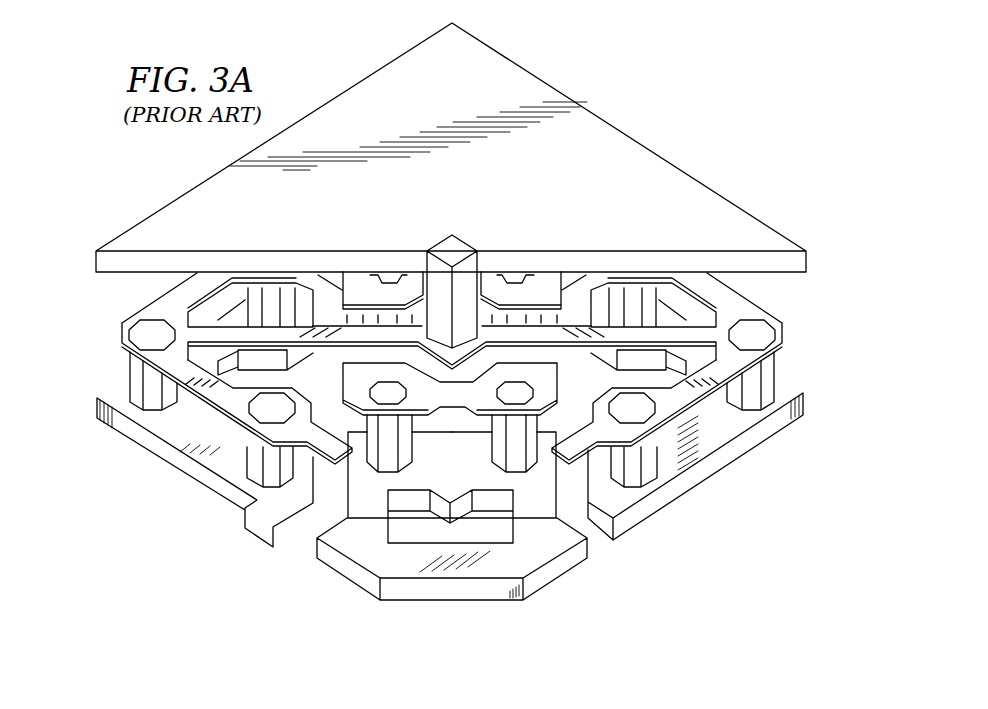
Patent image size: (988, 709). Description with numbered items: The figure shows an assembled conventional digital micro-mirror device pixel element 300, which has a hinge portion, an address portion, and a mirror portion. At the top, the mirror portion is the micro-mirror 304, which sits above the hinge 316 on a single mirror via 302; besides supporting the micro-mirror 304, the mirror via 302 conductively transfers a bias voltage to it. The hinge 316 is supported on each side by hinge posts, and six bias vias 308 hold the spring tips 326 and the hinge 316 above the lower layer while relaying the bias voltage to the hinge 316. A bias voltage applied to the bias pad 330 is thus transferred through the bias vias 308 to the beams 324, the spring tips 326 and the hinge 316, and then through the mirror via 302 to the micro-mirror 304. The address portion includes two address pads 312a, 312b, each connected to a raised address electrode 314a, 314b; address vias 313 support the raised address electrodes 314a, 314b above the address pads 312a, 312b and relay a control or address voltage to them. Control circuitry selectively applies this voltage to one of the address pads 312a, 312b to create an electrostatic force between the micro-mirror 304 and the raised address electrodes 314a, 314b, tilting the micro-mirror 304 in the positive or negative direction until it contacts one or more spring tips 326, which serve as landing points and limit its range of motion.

The DMD pixel element 300 is at (612, 91).
The mirror via 302 is at (444, 243).
The micro-mirror 304 is at (661, 173).
The bias vias 308 is at (137, 373).
The address pad 312a is at (450, 593).
The address pad 312b is at (567, 287).
The address vias 313 is at (372, 462).
The raised address electrode 314a is at (425, 405).
The raised address electrode 314b is at (357, 278).
The hinge 316 is at (223, 330).
The beams 324 is at (120, 337).
The spring tips 326 is at (314, 456).
The bias pad 330 is at (202, 477).